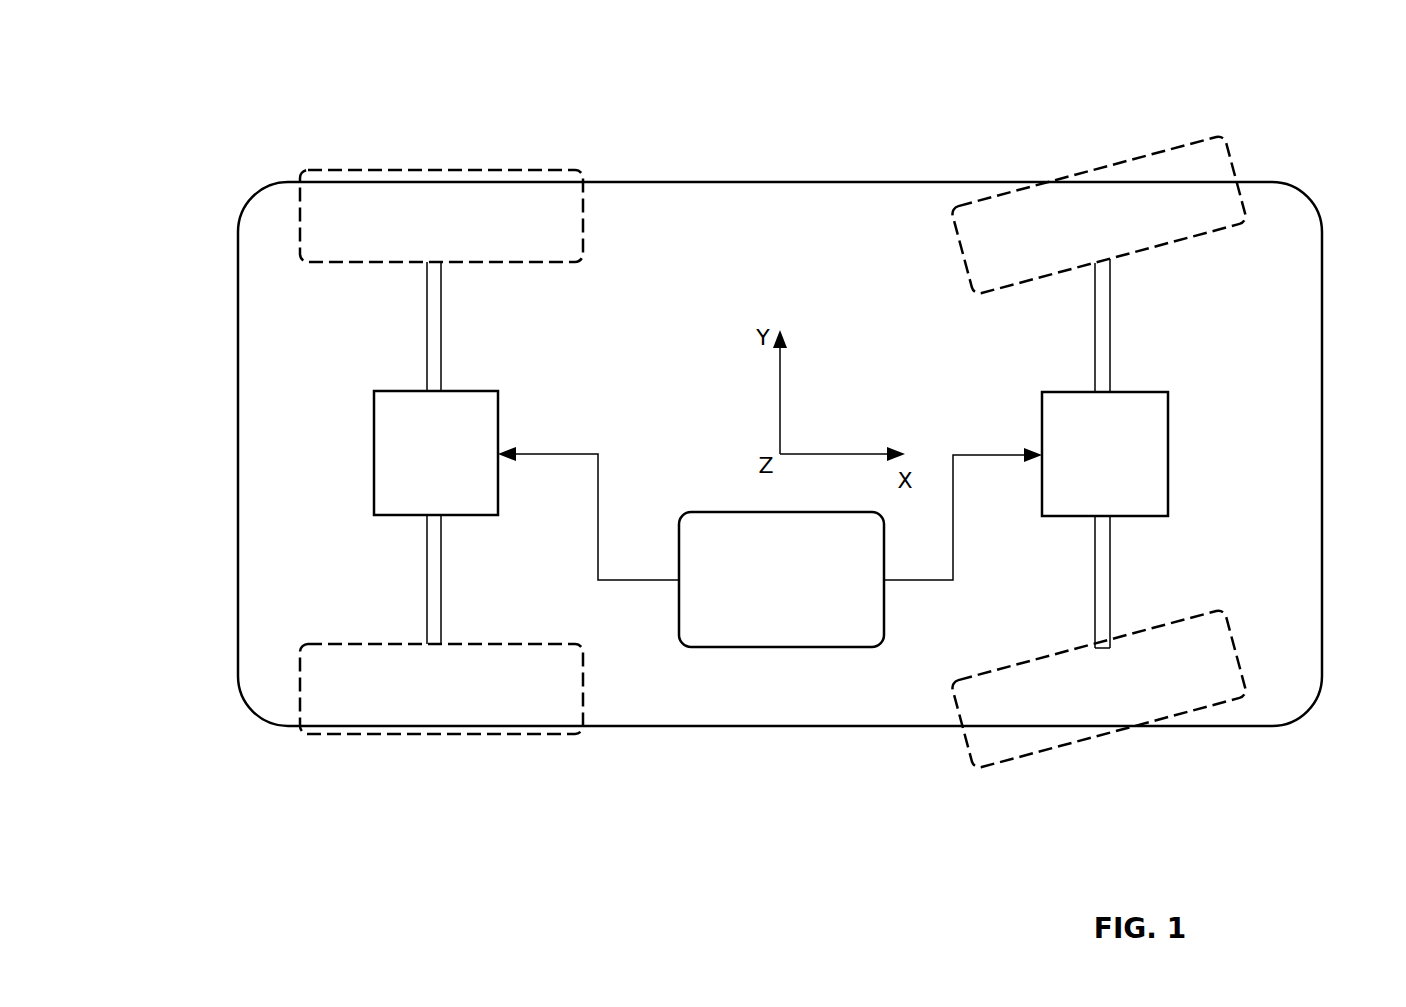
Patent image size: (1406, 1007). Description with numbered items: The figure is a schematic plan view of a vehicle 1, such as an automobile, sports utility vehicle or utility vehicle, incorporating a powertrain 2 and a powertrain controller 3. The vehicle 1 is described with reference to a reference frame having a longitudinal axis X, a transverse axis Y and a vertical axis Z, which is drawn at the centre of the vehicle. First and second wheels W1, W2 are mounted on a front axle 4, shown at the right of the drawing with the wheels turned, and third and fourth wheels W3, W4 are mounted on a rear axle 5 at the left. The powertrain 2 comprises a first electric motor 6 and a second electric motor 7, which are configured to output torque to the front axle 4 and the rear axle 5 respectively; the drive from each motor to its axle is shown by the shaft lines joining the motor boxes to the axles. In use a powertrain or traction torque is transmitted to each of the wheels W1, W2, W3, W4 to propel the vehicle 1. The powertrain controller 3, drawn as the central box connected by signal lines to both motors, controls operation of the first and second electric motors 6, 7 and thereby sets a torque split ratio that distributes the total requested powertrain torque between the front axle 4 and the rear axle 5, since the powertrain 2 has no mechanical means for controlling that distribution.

The vehicle 1 is at (176, 230).
The powertrain 2 is at (1180, 316).
The powertrain controller 3 is at (795, 660).
The front axle 4 is at (1128, 338).
The rear axle 5 is at (403, 324).
The first electric motor 6 is at (1184, 456).
The second electric motor 7 is at (358, 453).
The first wheel W1 is at (1088, 160).
The second wheel W2 is at (1083, 752).
The third wheel W3 is at (372, 158).
The fourth wheel W4 is at (372, 748).